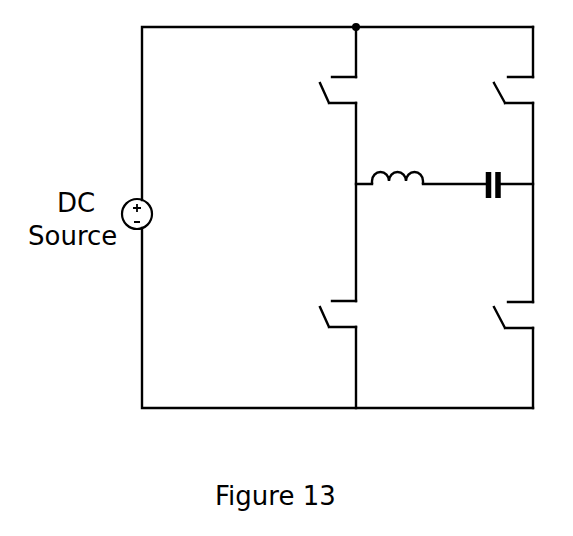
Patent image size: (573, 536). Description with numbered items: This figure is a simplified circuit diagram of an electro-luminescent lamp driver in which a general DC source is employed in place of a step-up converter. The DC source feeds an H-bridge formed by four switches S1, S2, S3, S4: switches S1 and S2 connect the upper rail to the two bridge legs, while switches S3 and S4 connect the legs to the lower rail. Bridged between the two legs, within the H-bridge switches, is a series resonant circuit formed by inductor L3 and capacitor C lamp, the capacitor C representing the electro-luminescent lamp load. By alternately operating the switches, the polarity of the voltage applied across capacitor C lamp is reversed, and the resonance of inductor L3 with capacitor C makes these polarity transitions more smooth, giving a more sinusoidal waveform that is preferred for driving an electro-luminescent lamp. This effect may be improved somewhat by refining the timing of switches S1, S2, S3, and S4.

The switch S1 is at (331, 73).
The switch S2 is at (508, 73).
The switch S3 is at (331, 295).
The switch S4 is at (508, 296).
The inductor L3 is at (397, 160).
The capacitor C lamp C is at (479, 167).